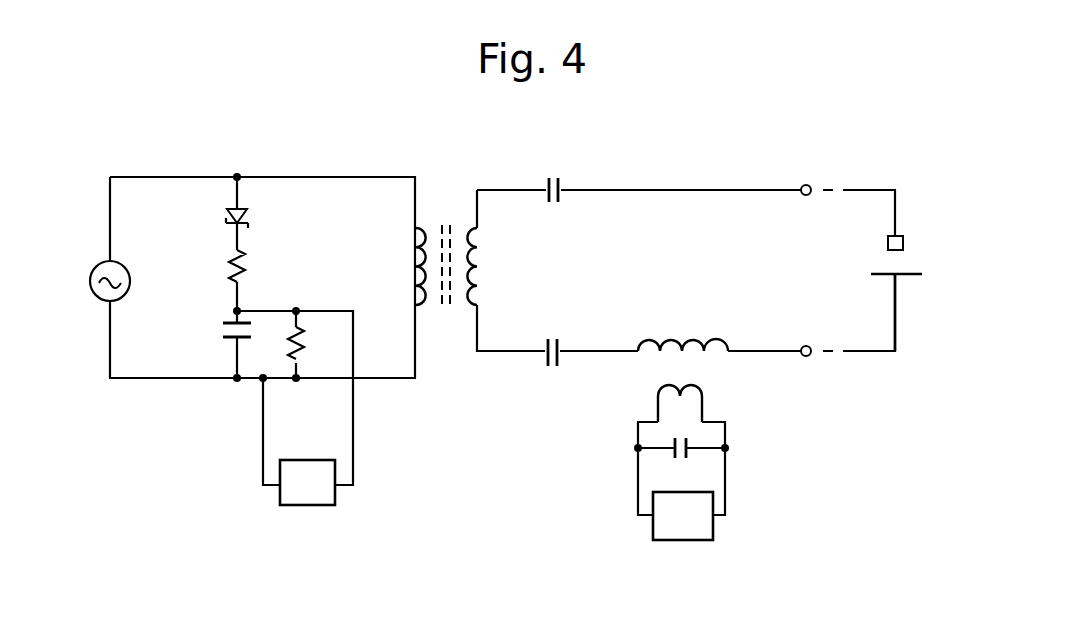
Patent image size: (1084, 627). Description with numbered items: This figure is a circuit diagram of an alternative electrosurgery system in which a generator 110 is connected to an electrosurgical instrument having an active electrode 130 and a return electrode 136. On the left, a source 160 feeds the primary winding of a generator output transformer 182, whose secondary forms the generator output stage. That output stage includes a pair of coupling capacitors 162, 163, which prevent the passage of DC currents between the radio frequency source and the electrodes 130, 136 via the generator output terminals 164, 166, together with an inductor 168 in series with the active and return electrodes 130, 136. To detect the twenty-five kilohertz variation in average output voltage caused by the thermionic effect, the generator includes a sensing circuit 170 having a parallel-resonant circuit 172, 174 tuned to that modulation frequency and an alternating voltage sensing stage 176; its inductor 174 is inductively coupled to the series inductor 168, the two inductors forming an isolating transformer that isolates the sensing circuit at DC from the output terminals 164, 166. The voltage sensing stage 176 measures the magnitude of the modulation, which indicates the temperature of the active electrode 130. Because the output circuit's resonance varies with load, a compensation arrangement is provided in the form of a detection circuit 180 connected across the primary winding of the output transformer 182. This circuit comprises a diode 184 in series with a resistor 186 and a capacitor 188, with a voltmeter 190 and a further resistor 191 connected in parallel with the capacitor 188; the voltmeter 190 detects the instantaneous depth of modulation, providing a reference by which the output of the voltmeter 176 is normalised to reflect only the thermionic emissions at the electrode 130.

The generator 110 is at (552, 411).
The active electrode 130 is at (904, 244).
The return electrode 136 is at (913, 279).
The AC power source 160 is at (108, 261).
The coupling capacitor 162 is at (561, 180).
The coupling capacitor 163 is at (560, 344).
The generator output terminal 164 is at (806, 184).
The generator output terminal 166 is at (806, 345).
The inductor 168 is at (715, 345).
The sensing circuit 170 is at (770, 429).
The resonant circuit 172 is at (704, 393).
The inductor 174 is at (690, 456).
The alternating voltage sensing stage 176 is at (697, 541).
The detection circuit 180 is at (281, 168).
The generator output transformer 182 is at (455, 182).
The diode 184 is at (232, 218).
The resistor 186 is at (245, 277).
The capacitor 188 is at (231, 327).
The voltmeter 190 is at (280, 497).
The further resistor 191 is at (305, 350).